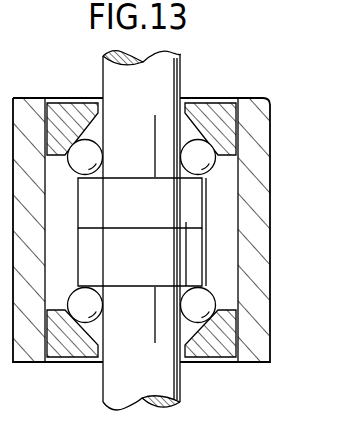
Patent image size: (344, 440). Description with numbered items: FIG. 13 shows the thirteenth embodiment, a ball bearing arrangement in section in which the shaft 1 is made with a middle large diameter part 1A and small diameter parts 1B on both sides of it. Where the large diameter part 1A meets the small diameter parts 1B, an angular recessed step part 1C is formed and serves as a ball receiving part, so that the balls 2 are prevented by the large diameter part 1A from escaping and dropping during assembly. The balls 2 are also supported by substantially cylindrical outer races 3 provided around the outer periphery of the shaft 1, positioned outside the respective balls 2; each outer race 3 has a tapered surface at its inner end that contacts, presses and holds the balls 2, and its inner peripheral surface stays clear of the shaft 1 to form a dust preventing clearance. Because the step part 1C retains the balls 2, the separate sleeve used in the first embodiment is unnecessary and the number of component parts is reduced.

The shaft 1 is at (199, 232).
The middle large diameter part 1A is at (192, 237).
The small diameter parts 1B is at (172, 178).
The angular recessed step part 1C is at (193, 285).
The balls 2 is at (73, 296).
The outer races 3 is at (213, 114).